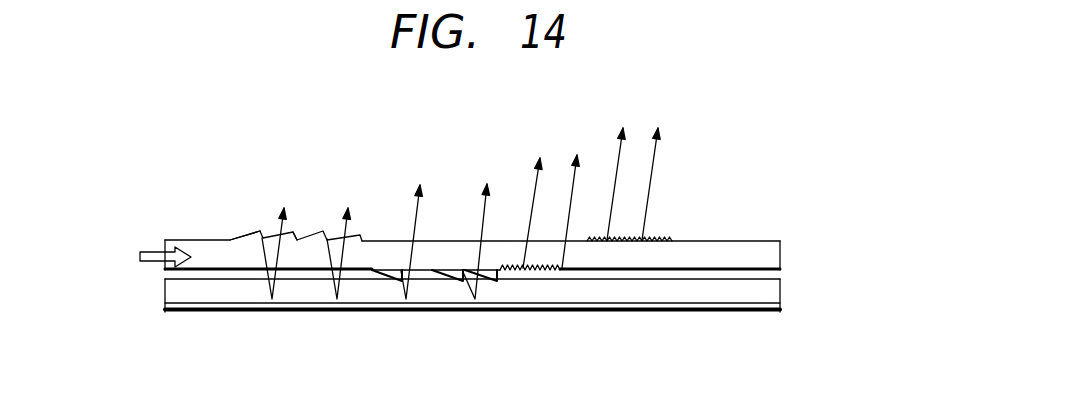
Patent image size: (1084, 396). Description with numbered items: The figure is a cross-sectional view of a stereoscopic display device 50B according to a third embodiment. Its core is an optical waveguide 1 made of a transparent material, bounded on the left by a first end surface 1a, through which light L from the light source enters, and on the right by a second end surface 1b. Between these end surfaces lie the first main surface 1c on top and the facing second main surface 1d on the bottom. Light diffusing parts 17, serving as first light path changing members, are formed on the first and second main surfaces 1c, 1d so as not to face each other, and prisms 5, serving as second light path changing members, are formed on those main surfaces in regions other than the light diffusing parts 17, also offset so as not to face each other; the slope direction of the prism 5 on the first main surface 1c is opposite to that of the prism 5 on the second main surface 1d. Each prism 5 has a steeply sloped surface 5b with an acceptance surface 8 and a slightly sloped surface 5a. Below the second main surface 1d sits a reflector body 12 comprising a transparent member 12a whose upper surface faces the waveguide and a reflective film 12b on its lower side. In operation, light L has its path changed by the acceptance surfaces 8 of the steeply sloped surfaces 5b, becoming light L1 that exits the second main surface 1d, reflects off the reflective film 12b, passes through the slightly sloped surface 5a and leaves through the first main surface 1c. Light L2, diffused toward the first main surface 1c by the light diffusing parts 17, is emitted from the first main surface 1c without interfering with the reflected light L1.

The optical waveguide 1 is at (776, 239).
The first end surface 1a is at (163, 267).
The second end surface 1b is at (782, 248).
The first main surface 1c is at (388, 242).
The second main surface 1d is at (305, 271).
The prism 5 is at (321, 215).
The slightly sloped surface 5a is at (259, 231).
The steeply sloped surface 5b is at (303, 232).
The acceptance surface 8 is at (351, 280).
The reflector body 12 is at (887, 268).
The transparent member 12a is at (768, 290).
The reflective film 12b is at (773, 308).
The light diffusing part 17 is at (512, 267).
The stereoscopic display device 50B is at (760, 146).
The light L is at (152, 250).
The light L1 is at (357, 231).
The light L2 is at (536, 194).